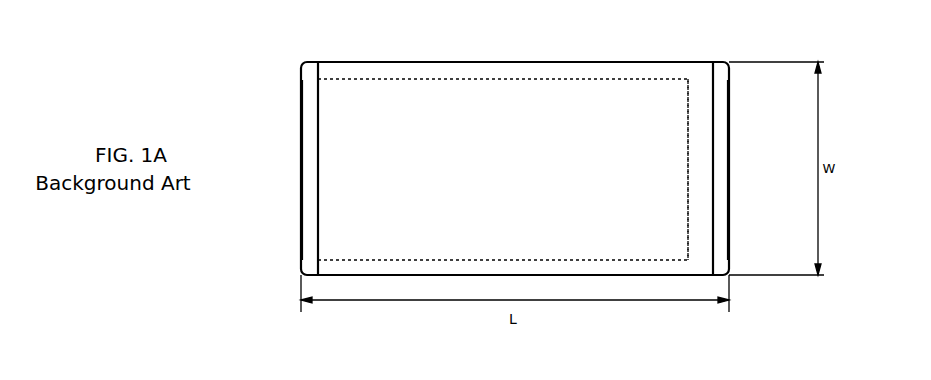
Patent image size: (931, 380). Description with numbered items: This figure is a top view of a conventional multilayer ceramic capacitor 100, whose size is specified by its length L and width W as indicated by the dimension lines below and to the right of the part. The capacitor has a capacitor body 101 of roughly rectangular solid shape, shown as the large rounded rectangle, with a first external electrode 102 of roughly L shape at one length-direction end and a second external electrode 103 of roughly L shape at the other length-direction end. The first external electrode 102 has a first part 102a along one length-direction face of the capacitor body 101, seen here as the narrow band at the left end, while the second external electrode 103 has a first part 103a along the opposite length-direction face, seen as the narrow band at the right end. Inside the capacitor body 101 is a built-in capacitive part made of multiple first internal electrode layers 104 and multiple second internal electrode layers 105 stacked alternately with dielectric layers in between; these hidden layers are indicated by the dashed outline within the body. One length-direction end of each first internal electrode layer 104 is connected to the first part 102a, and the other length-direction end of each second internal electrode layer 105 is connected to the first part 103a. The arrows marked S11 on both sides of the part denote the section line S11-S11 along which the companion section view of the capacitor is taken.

The multilayer ceramic capacitor 100 is at (389, 62).
The capacitor body 101 is at (461, 61).
The first external electrode 102 is at (301, 130).
The first part of the first external electrode 102a is at (301, 196).
The second external electrode 103 is at (729, 130).
The first part of the second external electrode 103a is at (729, 205).
The first internal electrode layers 104 is at (566, 90).
The second internal electrode layers 105 is at (704, 88).
The section line S11- S11 is at (301, 171).